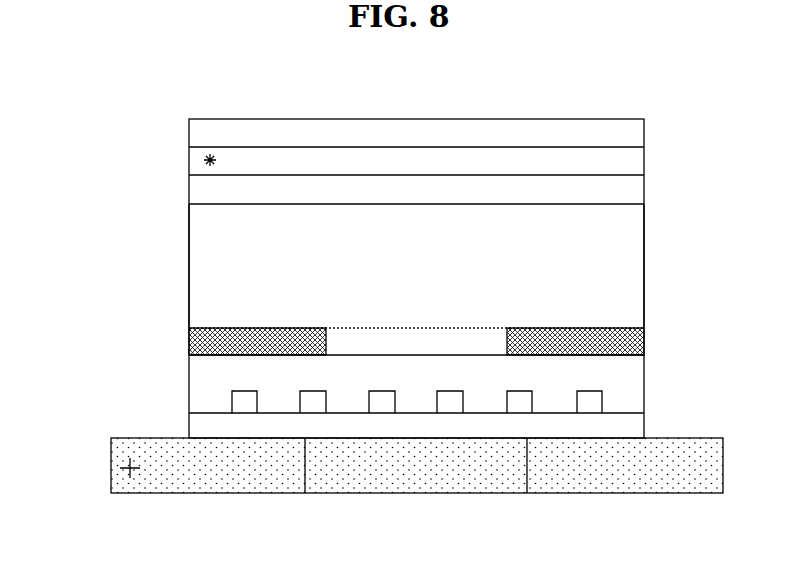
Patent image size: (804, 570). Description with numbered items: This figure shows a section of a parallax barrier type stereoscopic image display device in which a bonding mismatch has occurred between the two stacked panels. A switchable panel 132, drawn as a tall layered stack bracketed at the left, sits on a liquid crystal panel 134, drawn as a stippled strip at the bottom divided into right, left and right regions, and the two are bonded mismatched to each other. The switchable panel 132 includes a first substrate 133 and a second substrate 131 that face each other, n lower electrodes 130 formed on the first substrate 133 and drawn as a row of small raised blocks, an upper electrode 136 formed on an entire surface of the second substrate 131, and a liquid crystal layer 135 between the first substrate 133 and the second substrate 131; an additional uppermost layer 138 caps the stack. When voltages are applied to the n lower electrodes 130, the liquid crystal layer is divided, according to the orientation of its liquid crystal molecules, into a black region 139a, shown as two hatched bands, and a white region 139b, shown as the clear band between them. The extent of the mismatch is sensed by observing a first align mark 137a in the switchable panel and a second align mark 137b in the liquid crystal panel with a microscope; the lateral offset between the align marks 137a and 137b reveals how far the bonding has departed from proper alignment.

The lower electrodes 130 is at (597, 403).
The second substrate 131 is at (644, 162).
The switchable panel 132 is at (173, 118).
The first substrate 133 is at (636, 432).
The liquid crystal panel 134 is at (101, 438).
The liquid crystal layer 135 is at (644, 228).
The upper electrode 136 is at (644, 190).
The first align mark 137a is at (212, 153).
The second align mark 137b is at (131, 476).
The polarizer 138 is at (644, 133).
The black region 139a is at (644, 340).
The white region 139b is at (475, 333).